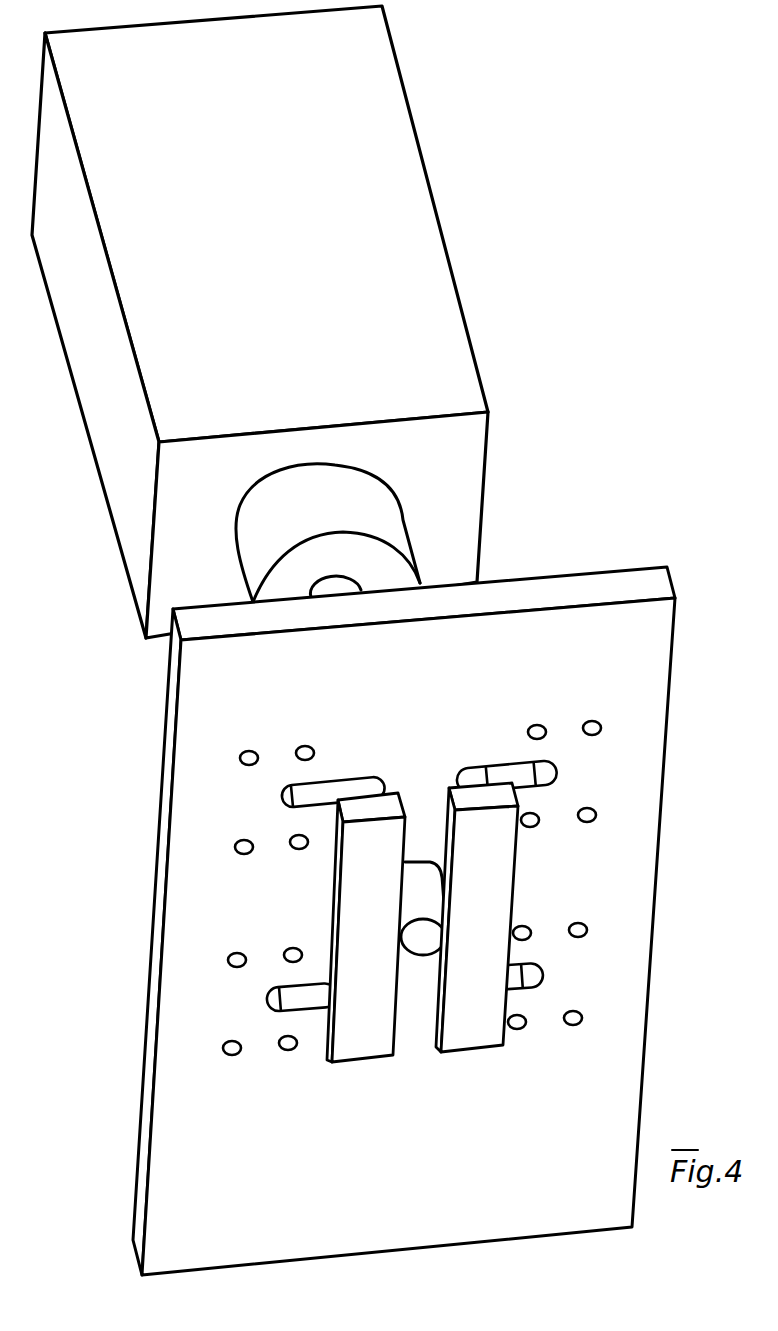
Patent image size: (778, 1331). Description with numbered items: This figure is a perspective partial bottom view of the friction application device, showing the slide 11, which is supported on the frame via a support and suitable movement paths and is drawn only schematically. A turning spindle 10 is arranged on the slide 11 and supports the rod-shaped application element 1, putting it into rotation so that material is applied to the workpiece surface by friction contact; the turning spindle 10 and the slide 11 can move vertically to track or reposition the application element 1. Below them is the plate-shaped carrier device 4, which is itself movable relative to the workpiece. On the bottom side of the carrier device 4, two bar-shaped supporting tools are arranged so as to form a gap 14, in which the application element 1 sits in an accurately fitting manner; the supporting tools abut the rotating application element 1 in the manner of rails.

The application element 1 is at (415, 902).
The carrier device 4 is at (198, 709).
The turning spindle 10 is at (283, 523).
The slide 11 is at (433, 276).
The gap 14 is at (412, 1038).